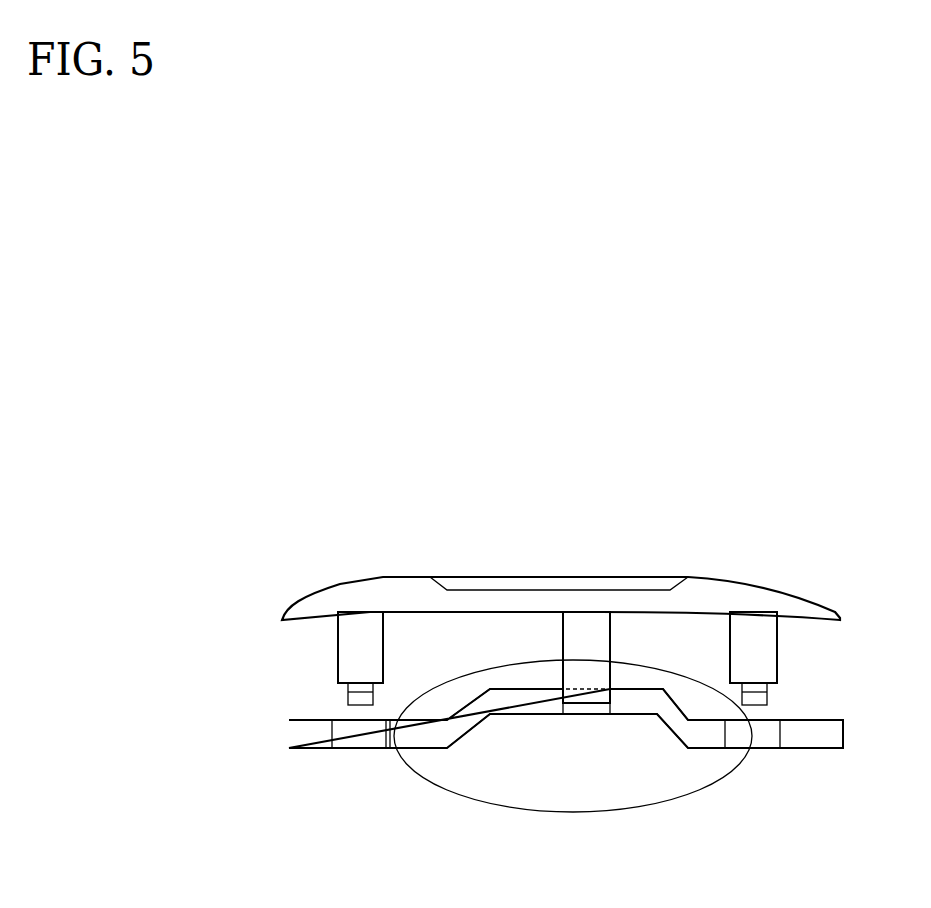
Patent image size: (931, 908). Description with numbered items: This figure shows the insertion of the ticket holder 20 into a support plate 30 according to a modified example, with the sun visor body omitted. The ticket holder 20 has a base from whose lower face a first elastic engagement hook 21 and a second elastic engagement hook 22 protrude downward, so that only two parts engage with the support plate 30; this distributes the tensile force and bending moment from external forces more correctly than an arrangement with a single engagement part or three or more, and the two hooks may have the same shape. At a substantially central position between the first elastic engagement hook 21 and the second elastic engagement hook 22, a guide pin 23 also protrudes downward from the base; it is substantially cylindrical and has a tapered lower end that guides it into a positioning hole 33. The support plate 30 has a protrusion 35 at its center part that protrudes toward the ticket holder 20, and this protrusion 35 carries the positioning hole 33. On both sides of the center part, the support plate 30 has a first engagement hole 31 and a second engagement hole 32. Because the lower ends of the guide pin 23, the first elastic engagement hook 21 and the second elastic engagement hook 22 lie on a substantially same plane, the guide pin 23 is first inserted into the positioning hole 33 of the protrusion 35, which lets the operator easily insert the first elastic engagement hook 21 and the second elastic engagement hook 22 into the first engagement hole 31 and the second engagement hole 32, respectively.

The ticket holder 20 is at (773, 580).
The first elastic engagement hook 21 is at (770, 660).
The second elastic engagement hook 22 is at (348, 661).
The guide pin 23 is at (610, 645).
The support plate 30 is at (592, 778).
The first engagement hole 31 is at (778, 737).
The second engagement hole 32 is at (340, 737).
The positioning hole 33 is at (603, 718).
The protrusion 35 is at (433, 782).